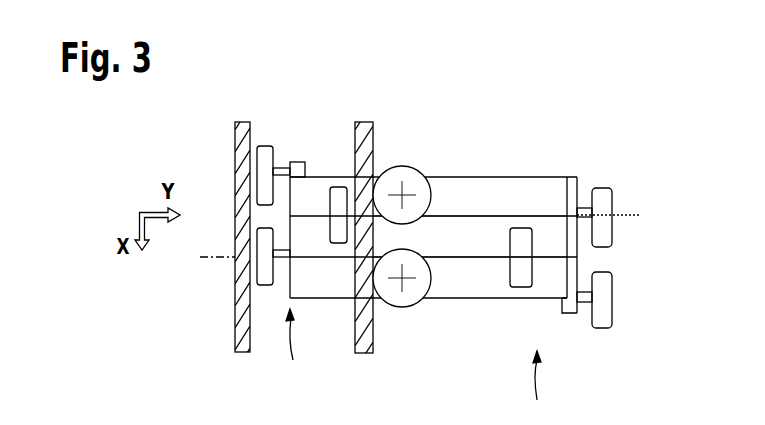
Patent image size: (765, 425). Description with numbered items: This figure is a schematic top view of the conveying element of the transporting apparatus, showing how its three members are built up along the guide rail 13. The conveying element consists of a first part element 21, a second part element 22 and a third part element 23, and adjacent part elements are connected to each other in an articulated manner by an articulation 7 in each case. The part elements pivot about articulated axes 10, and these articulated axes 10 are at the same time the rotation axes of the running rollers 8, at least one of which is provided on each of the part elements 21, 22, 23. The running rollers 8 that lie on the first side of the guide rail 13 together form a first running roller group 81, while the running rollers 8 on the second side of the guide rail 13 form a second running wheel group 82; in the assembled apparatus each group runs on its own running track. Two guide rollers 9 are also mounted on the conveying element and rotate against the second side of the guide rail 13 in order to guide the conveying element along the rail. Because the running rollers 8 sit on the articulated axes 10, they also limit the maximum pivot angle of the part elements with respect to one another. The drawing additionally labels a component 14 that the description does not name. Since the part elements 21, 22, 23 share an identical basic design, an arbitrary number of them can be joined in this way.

The articulation 7 is at (313, 215).
The running roller 8 is at (272, 146).
The guide roller 9 is at (410, 183).
The articulated axis 10 is at (207, 262).
The guide rail 13 is at (370, 140).
The base plate 14 is at (235, 128).
The first part element 21 is at (481, 188).
The second part element 22 is at (475, 249).
The third part element 23 is at (470, 290).
The first running roller group 81 is at (293, 346).
The second running wheel group 82 is at (540, 388).